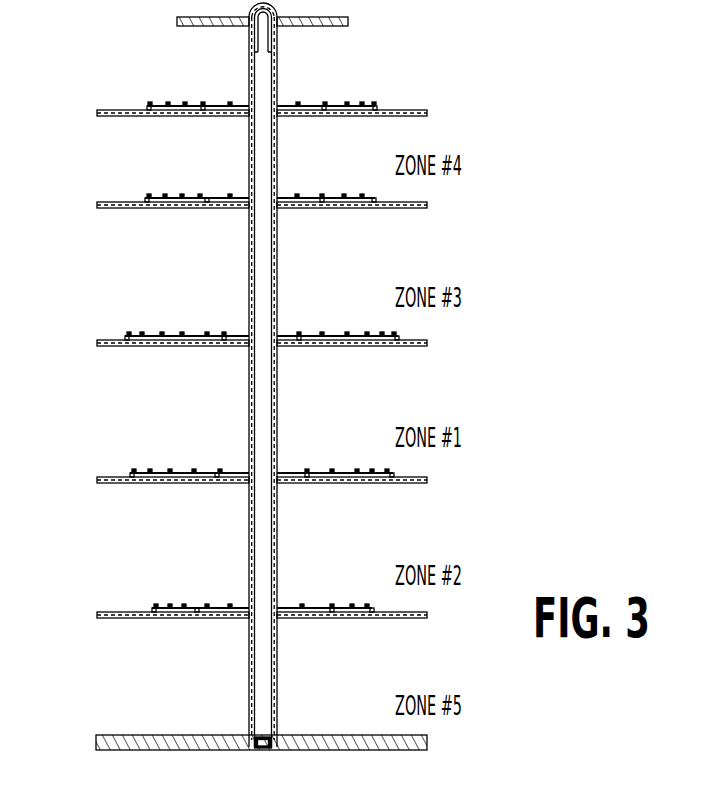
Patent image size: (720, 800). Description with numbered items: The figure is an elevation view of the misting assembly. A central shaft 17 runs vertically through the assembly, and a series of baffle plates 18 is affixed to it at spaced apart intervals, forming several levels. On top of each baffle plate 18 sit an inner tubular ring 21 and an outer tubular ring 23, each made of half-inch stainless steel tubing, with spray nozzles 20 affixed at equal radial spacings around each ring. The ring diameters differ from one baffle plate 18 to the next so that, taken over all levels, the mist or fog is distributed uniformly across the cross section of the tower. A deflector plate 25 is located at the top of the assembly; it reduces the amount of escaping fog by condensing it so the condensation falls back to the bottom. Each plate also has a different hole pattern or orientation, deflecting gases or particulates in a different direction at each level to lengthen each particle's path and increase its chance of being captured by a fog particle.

The central shaft 17 is at (277, 268).
The baffle plate 18 is at (404, 117).
The spray nozzle 20 is at (157, 335).
The inner tubular ring 21 is at (322, 106).
The outer tubular ring 23 is at (375, 107).
The deflector plate 25 is at (197, 26).